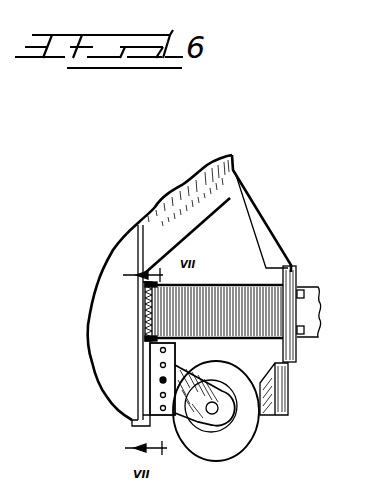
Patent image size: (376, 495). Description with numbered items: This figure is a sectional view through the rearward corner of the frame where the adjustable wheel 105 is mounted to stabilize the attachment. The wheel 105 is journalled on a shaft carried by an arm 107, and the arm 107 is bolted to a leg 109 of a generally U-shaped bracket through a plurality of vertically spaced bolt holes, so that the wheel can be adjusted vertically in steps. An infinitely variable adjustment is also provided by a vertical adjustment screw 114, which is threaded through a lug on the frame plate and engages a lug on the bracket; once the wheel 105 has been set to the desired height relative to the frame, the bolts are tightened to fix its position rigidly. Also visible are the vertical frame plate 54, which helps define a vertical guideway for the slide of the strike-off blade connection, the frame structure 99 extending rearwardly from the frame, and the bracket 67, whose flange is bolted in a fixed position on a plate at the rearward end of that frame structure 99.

The vertical frame plate 54 is at (138, 240).
The frame structure 99 is at (272, 246).
The vertical adjustment screw 114 is at (152, 310).
The bracket 67 is at (313, 290).
The leg 109 is at (172, 358).
The arm 107 is at (198, 396).
The adjustable wheel 105 is at (245, 453).